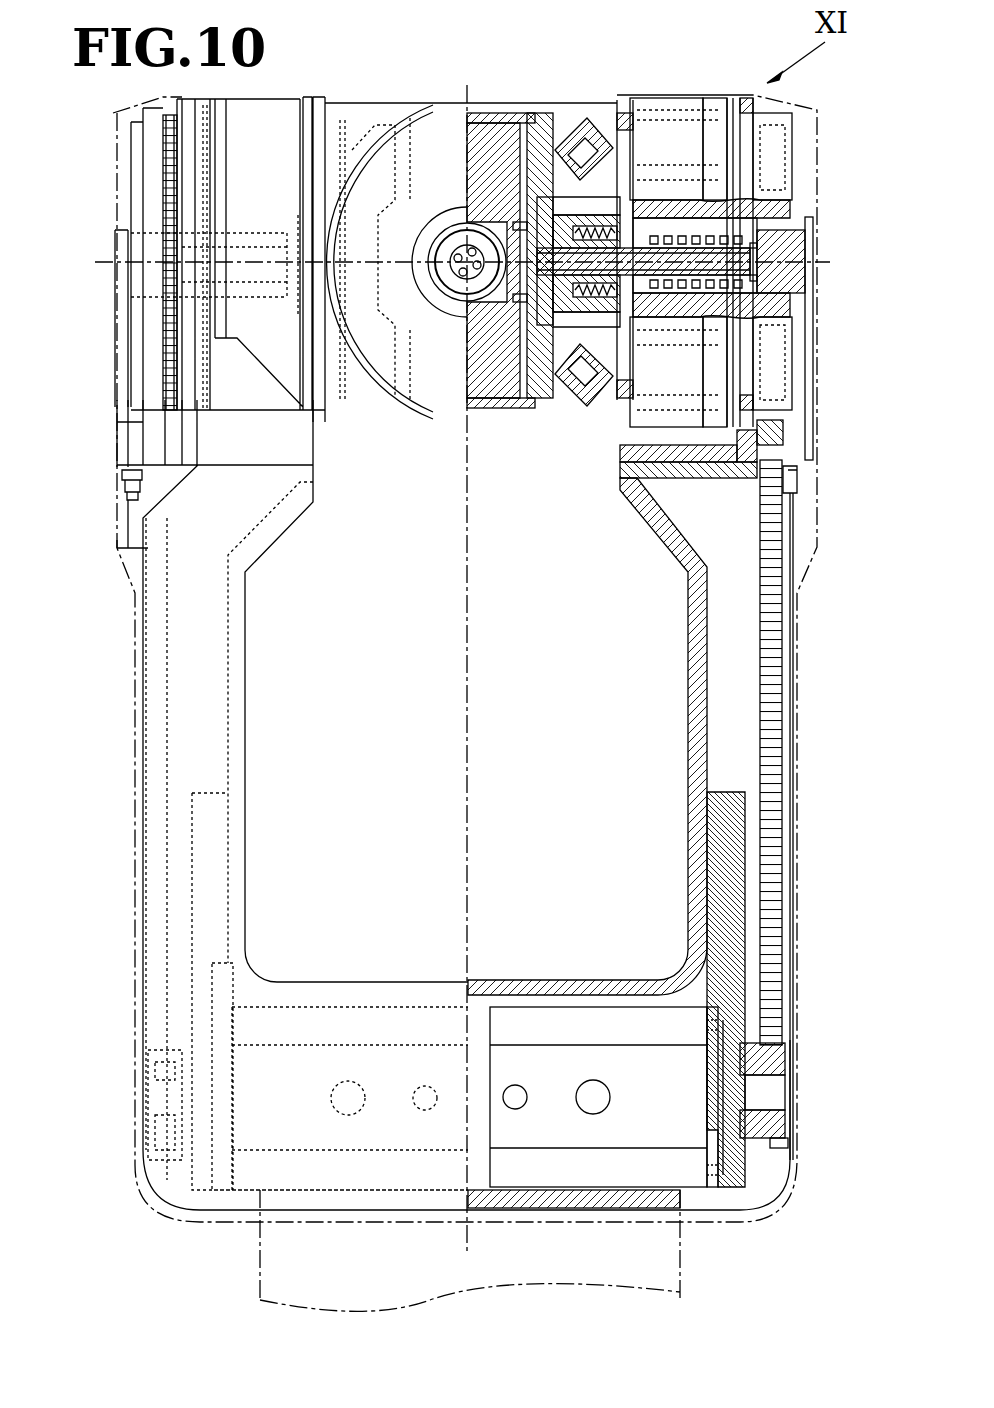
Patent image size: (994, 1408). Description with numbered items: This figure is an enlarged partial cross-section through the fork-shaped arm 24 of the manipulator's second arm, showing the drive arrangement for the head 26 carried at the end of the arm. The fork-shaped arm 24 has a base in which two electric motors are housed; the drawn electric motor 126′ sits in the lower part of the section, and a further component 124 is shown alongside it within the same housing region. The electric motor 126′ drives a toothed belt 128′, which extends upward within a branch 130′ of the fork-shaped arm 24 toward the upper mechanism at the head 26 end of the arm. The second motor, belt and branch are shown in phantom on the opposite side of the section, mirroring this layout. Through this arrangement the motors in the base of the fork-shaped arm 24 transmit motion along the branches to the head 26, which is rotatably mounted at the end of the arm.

The fork-shaped arm 24 is at (125, 905).
The head 26 is at (565, 102).
The motor 124 is at (535, 1007).
The electric motor 126′ is at (643, 1007).
The toothed belt 128′ is at (782, 718).
The branch 130′ is at (688, 648).